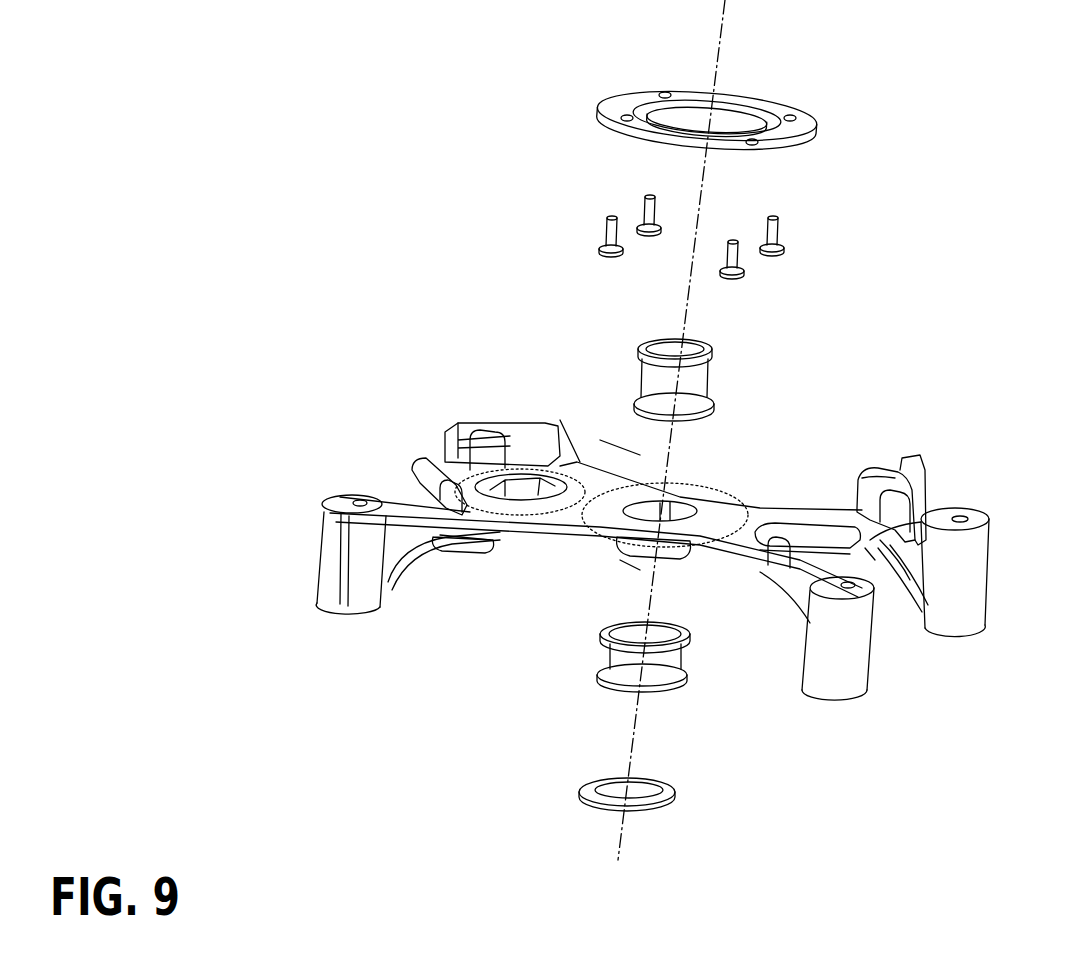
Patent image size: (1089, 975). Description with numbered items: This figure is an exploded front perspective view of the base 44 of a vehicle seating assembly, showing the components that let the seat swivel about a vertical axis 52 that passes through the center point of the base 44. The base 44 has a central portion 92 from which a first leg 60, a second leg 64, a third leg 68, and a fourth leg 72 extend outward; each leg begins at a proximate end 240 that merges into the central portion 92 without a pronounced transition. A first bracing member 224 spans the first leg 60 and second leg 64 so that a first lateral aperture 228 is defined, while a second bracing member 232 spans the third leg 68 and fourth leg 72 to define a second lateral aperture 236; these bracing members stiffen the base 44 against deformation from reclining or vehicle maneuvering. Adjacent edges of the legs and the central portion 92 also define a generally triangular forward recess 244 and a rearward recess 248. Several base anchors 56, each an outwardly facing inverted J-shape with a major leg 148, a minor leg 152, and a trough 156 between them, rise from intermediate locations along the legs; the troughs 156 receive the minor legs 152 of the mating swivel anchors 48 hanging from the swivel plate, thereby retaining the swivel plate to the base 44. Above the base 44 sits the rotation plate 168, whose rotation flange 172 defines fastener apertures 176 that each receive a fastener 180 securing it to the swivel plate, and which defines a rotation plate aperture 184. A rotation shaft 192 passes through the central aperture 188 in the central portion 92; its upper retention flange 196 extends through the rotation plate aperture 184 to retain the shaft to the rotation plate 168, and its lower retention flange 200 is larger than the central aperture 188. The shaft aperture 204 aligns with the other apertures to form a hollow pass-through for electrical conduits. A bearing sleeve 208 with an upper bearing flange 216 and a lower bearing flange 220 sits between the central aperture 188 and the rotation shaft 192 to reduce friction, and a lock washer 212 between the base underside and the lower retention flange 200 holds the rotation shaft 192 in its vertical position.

The base 44 is at (958, 212).
The swivel anchors 48 is at (681, 562).
The vertical axis 52 is at (622, 847).
The base anchors 56 is at (480, 418).
The first leg 60 is at (755, 558).
The second leg 64 is at (780, 510).
The third leg 68 is at (573, 463).
The fourth leg 72 is at (515, 508).
The central portion 92 is at (580, 462).
The major leg 148 is at (868, 500).
The minor leg 152 is at (918, 508).
The trough 156 is at (890, 490).
The rotation plate 168 is at (791, 101).
The rotation flange 172 is at (622, 97).
The fastener apertures 176 is at (662, 91).
The fastener 180 is at (607, 223).
The rotation plate aperture 184 is at (717, 132).
The central aperture 188 is at (685, 505).
The rotation shaft 192 is at (716, 354).
The upper retention flange 196 is at (646, 340).
The lower retention flange 200 is at (716, 405).
The shaft aperture 204 is at (715, 347).
The bearing sleeve 208 is at (637, 681).
The lock washer 212 is at (675, 793).
The upper bearing flange 216 is at (600, 623).
The lower bearing flange 220 is at (606, 678).
The first bracing member 224 is at (870, 555).
The first lateral aperture 228 is at (800, 530).
The second bracing member 232 is at (480, 465).
The second lateral aperture 236 is at (508, 500).
The proximate ends 240 is at (577, 462).
The forward recess 244 is at (638, 566).
The rearward recess 248 is at (640, 455).